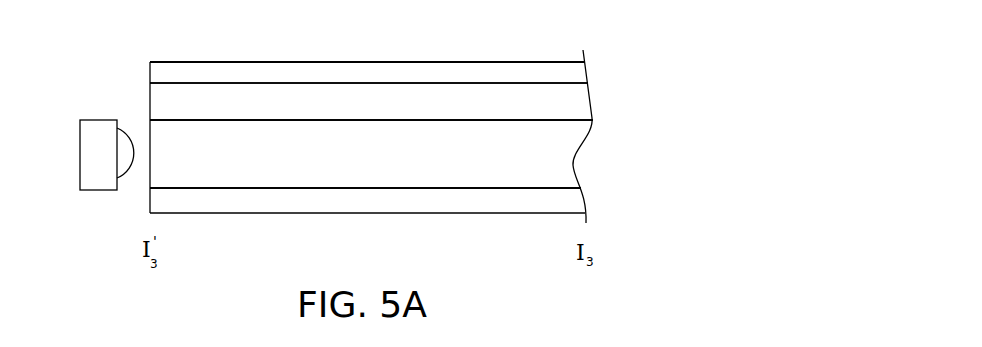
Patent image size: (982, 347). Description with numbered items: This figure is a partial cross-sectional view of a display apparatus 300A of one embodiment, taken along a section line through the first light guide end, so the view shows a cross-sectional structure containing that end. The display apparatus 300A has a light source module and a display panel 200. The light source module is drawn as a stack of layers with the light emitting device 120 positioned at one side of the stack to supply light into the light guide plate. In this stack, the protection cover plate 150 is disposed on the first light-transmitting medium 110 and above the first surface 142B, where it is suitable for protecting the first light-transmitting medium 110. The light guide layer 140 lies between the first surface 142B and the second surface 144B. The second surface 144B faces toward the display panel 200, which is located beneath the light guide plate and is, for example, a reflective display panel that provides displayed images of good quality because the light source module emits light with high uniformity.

The light emitting device 120 is at (93, 156).
The protection cover plate 150 is at (577, 73).
The first light-transmitting medium 110 is at (577, 107).
The middle layer 140 is at (565, 163).
The display panel 200 is at (567, 203).
The first surface 142B is at (415, 118).
The second surface 144B is at (435, 191).
The display apparatus 300A is at (417, 151).